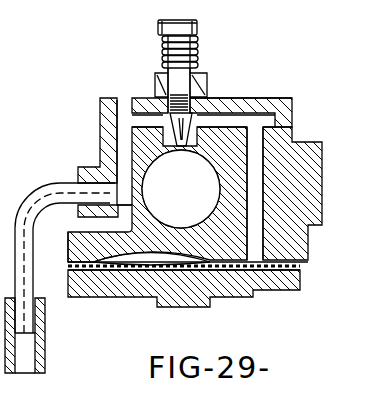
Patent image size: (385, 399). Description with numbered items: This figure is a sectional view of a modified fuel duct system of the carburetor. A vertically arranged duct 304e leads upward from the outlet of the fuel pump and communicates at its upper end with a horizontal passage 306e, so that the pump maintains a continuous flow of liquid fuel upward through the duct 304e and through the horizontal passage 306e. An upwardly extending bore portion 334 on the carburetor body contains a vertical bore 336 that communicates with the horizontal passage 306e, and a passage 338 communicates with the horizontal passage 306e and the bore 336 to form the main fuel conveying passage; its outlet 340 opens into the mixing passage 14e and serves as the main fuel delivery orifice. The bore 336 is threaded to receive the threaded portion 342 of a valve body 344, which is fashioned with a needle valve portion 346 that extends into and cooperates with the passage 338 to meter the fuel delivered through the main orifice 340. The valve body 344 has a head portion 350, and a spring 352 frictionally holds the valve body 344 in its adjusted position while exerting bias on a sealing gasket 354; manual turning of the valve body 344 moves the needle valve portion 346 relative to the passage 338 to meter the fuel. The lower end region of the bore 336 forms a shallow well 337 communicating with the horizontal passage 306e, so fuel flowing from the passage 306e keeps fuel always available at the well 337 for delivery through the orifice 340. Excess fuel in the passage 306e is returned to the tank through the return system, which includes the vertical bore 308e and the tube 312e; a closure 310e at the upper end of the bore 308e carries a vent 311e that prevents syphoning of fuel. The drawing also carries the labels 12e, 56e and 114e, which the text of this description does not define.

The head portion 350 is at (158, 27).
The spring 352 is at (163, 45).
The valve body 344 is at (156, 74).
The threaded portion 342 is at (173, 86).
The vertical bore 336 is at (158, 97).
The sealing gasket 354 is at (198, 72).
The bore portion 334 is at (206, 77).
The needle valve portion 346 is at (196, 99).
The top surface 12e is at (263, 97).
The horizontal passage 306e is at (258, 117).
The closure 310e is at (100, 113).
The vent 311e is at (112, 132).
The vertical bore 308e is at (118, 155).
The tube 312e is at (55, 188).
The duct 304e is at (256, 158).
The shallow well 337 is at (247, 153).
The outlet 340 is at (182, 147).
The passage 338 is at (149, 158).
The mixing passage 14e is at (188, 210).
The diaphragm 56e is at (95, 262).
The tube fitting 114e is at (45, 350).